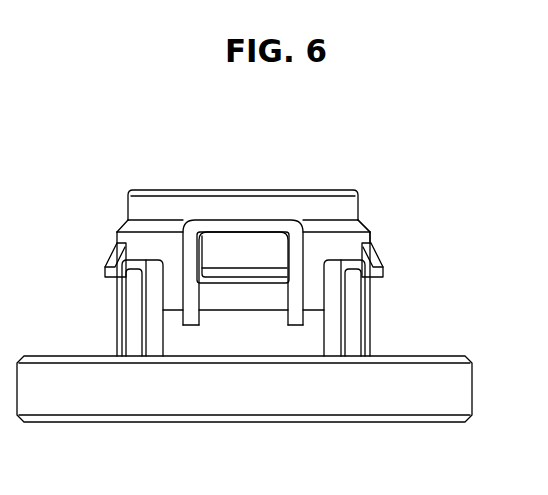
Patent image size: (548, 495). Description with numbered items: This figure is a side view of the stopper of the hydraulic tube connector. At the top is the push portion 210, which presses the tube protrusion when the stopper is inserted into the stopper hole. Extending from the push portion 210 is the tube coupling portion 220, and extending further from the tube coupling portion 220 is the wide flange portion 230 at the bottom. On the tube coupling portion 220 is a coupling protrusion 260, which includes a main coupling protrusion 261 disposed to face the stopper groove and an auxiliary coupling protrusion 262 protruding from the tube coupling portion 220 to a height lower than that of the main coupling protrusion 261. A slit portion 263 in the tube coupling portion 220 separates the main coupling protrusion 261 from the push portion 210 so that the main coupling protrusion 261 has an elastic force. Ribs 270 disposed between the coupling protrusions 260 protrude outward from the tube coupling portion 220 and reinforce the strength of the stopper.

The push portion 210 is at (336, 191).
The tube coupling portion 220 is at (368, 241).
The flange portion 230 is at (459, 388).
The coupling protrusion 260 is at (292, 203).
The main coupling protrusion 261 is at (249, 247).
The auxiliary coupling protrusion 262 is at (386, 268).
The slit portion 263 is at (213, 225).
The rib 270 is at (127, 321).